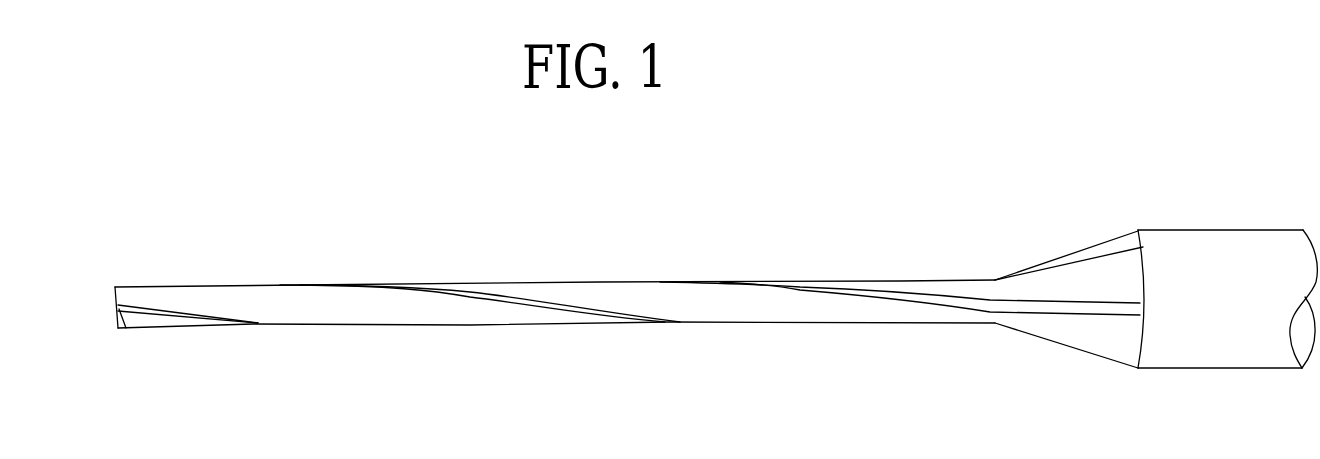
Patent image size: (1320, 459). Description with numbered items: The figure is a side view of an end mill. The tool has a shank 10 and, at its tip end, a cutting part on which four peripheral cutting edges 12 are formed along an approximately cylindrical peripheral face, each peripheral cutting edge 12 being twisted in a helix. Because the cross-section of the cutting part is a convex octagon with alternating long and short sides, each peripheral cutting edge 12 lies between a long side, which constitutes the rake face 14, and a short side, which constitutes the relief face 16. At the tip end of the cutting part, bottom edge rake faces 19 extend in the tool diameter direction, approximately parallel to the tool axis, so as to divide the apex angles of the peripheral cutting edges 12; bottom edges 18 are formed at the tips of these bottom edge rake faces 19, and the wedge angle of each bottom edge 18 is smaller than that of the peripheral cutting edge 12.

The shank 10 is at (1213, 250).
The peripheral cutting edge 12 is at (489, 294).
The rake face 14 is at (518, 295).
The relief face 16 is at (502, 303).
The bottom edge 18 is at (118, 311).
The bottom edge rake face 19 is at (122, 330).